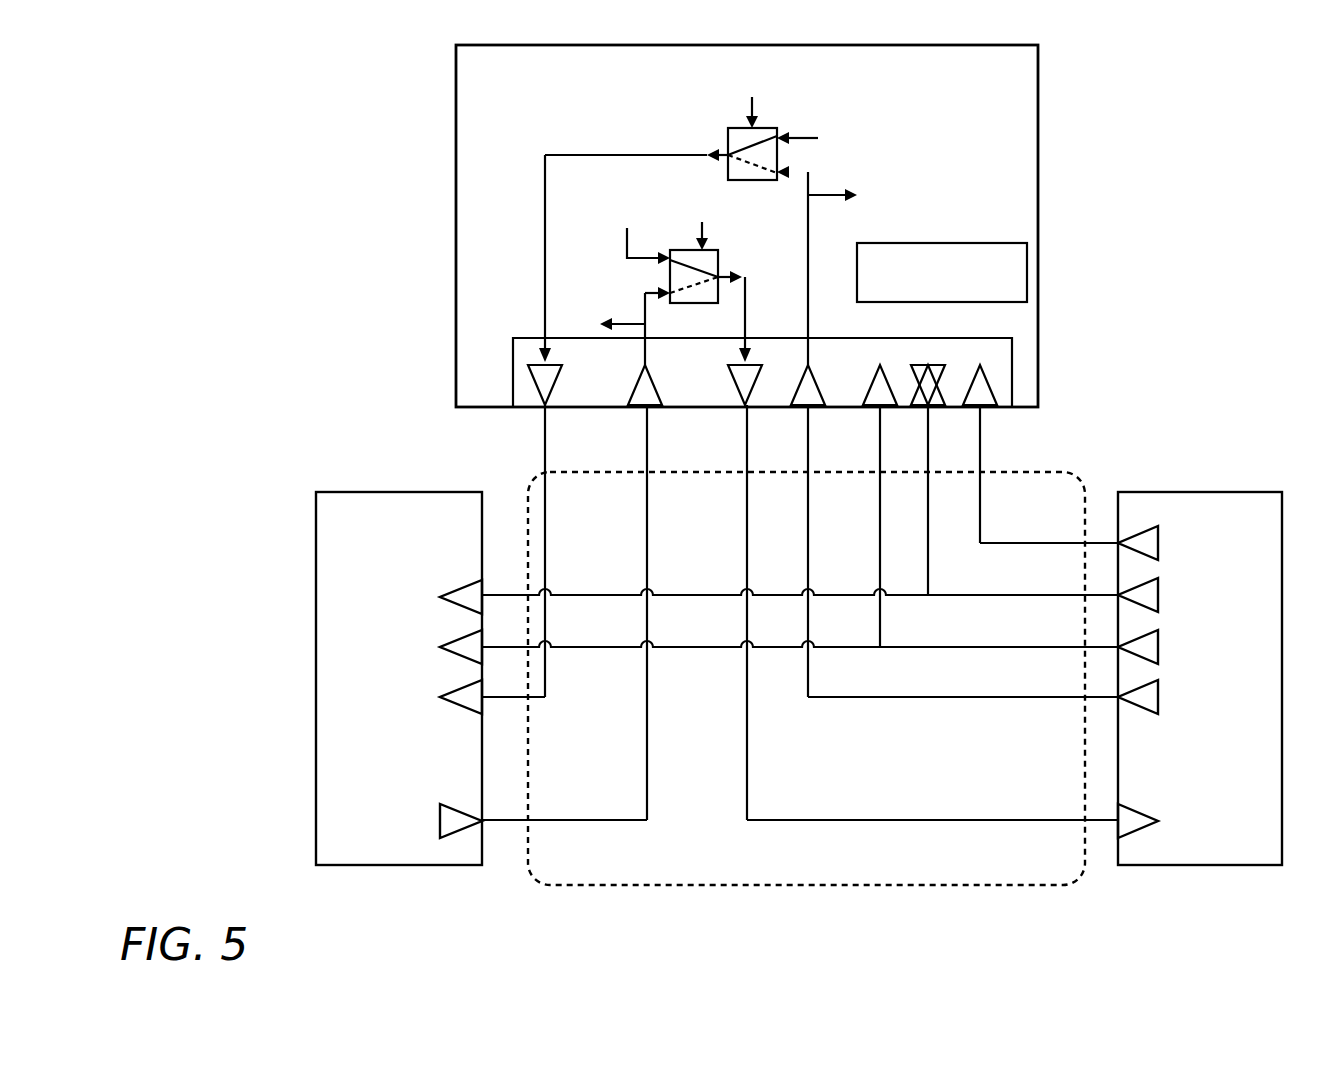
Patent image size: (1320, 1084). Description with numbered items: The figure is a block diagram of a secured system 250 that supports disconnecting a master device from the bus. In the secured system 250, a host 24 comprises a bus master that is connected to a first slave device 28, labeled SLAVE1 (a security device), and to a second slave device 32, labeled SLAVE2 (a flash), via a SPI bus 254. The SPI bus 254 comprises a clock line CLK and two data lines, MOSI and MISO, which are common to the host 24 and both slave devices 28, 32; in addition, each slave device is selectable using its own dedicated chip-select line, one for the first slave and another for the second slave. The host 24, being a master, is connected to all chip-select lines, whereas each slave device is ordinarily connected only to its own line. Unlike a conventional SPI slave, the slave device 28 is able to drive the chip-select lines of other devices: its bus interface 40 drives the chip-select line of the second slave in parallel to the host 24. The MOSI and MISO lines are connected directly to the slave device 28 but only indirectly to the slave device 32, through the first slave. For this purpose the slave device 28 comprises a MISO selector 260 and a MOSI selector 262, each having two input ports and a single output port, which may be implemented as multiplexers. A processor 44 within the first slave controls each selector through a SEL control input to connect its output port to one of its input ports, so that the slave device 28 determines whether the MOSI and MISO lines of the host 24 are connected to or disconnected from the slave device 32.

The secured system 250 is at (364, 159).
The slave device 28 is at (1038, 120).
The MOSI selector 262 is at (772, 128).
The MISO selector 260 is at (718, 257).
The processor 44 is at (1027, 272).
The bus interface 40 is at (1012, 375).
The slave device 32 is at (360, 492).
The host 24 is at (1222, 492).
The SPI bus 254 is at (607, 885).